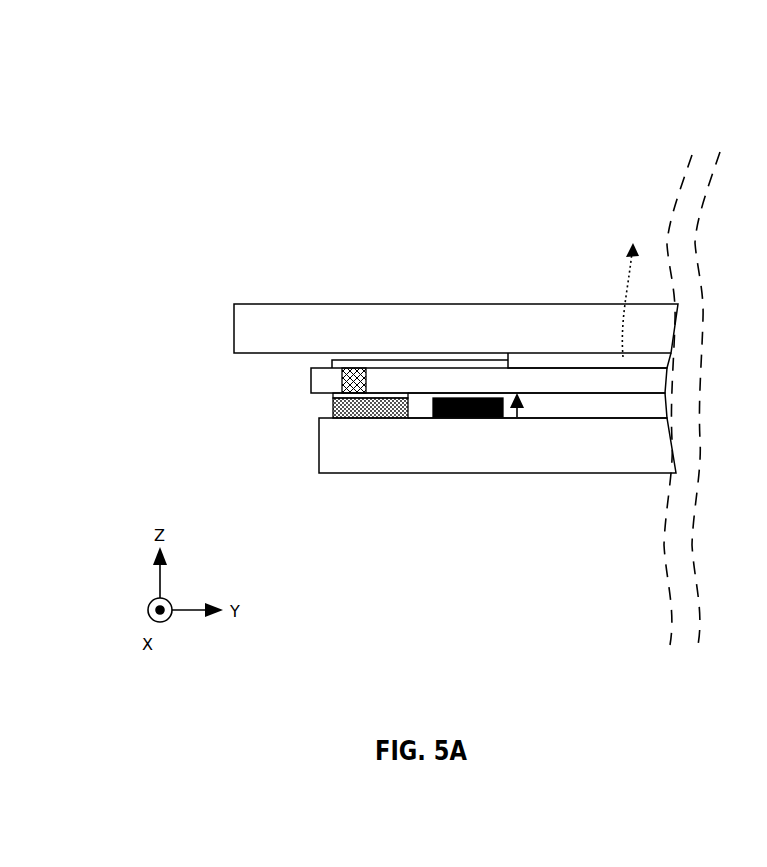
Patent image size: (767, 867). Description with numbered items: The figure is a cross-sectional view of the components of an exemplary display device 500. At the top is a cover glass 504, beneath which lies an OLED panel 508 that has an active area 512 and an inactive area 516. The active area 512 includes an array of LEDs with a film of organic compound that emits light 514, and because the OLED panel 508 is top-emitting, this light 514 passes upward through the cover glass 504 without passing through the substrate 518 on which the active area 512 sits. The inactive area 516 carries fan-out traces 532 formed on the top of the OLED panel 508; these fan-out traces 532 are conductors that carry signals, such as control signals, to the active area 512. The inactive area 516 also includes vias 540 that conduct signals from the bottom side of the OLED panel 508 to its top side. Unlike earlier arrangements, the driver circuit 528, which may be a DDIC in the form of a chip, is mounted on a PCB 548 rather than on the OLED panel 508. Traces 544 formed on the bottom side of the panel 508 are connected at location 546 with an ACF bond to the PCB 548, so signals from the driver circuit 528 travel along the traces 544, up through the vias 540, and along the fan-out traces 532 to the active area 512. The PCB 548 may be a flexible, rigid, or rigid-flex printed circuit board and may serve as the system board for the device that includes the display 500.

The display device 500 is at (142, 101).
The cover glass 504 is at (262, 304).
The OLED panel 508 is at (517, 417).
The active area 512 is at (580, 362).
The light 514 is at (632, 289).
The inactive area 516 is at (427, 382).
The substrate 518 is at (617, 383).
The driver circuit 528 is at (458, 417).
The fan-out traces 532 is at (432, 362).
The vias 540 is at (352, 378).
The traces 544 is at (332, 396).
The location 546 is at (328, 413).
The PCB 548 is at (343, 473).